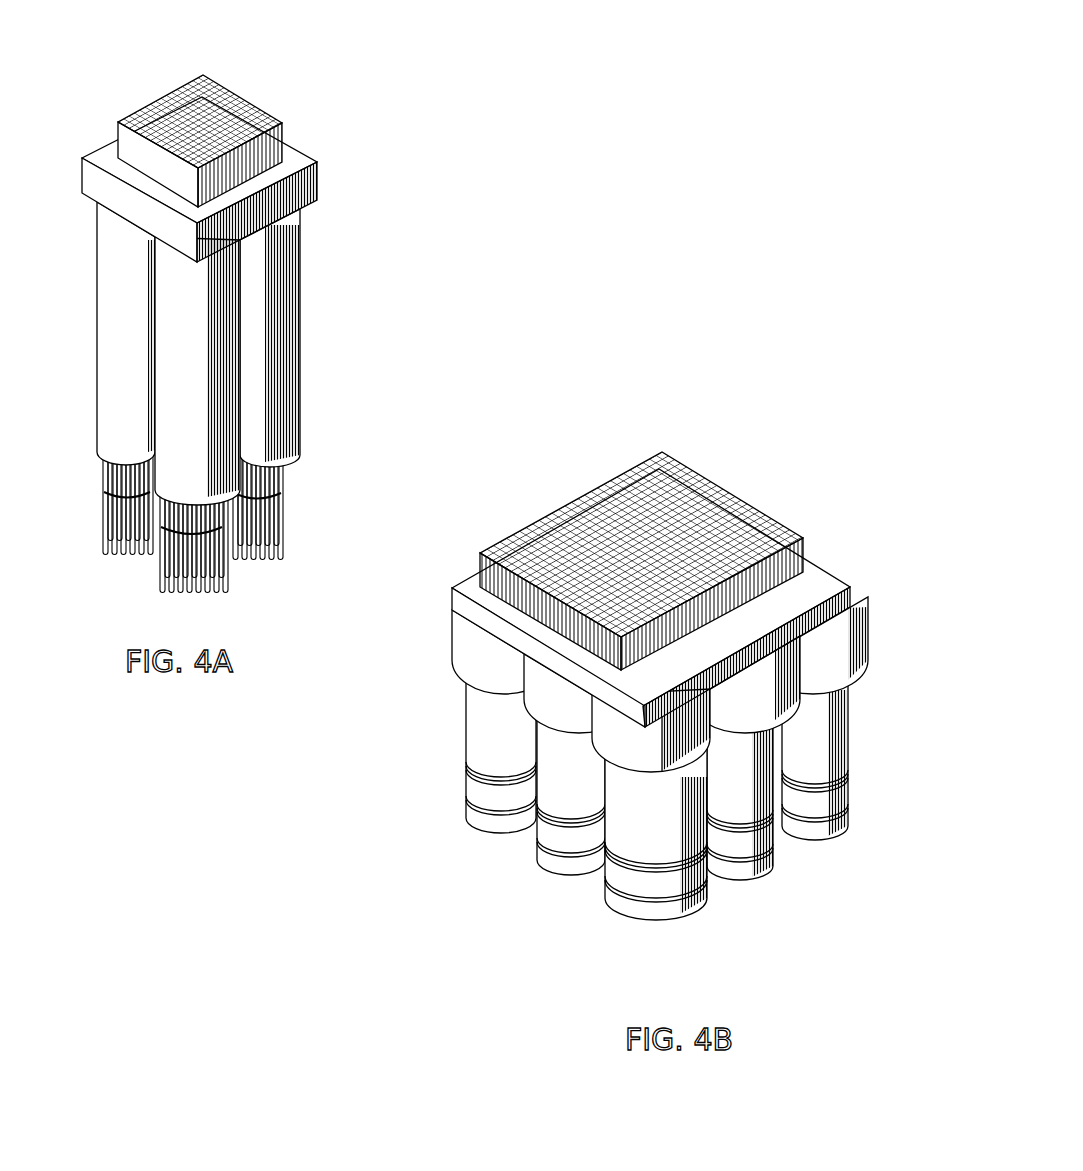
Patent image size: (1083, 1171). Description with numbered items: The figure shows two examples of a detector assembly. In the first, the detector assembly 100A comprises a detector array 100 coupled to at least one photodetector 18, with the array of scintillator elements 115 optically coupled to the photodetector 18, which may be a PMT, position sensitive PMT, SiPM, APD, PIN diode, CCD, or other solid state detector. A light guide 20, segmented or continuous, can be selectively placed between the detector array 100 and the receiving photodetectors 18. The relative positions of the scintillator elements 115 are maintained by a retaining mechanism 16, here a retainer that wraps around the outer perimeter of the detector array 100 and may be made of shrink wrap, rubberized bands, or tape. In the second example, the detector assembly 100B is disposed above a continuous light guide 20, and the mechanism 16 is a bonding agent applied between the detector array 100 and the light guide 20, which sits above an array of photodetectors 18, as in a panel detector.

In FIG. 4A, the detector assembly 100A is at (280, 306).
In FIG. 4B, the detector assembly 100B is at (660, 602).
In FIG. 4A, the detector array 100 is at (200, 113).
In FIG. 4B, the detector array 100 is at (643, 526).
In FIG. 4A, the scintillator elements 115 is at (148, 118).
In FIG. 4B, the scintillator elements 115 is at (633, 480).
In FIG. 4A, the retaining mechanism 16 is at (287, 130).
In FIG. 4B, the retaining mechanism 16 is at (457, 620).
In FIG. 4A, the light guide 20 is at (320, 178).
In FIG. 4B, the light guide 20 is at (827, 573).
In FIG. 4A, the photodetector 18 is at (303, 246).
In FIG. 4B, the photodetector 18 is at (483, 714).